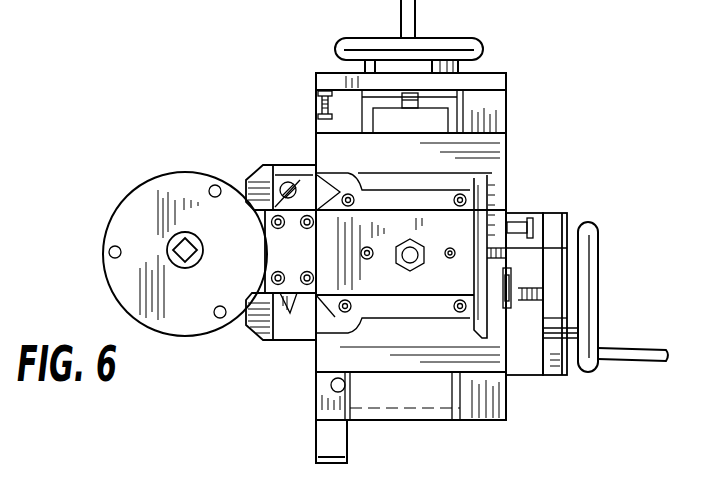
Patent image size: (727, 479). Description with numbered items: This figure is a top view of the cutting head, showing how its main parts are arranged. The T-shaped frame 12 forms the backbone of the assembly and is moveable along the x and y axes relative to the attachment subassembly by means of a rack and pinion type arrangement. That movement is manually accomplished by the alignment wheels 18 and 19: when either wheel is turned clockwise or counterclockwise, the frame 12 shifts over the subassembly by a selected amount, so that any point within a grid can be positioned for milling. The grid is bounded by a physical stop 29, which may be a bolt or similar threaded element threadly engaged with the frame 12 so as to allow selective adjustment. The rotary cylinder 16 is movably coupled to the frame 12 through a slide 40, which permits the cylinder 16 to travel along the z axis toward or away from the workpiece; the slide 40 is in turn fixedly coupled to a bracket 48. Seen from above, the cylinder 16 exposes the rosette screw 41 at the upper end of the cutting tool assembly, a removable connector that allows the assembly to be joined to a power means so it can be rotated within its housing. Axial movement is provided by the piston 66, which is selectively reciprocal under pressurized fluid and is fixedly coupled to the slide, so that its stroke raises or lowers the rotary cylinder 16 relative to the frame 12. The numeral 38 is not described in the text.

The T-shaped frame 12 is at (506, 147).
The rotary cylinder 16 is at (180, 183).
The alignment wheel 18 is at (460, 38).
The alignment wheel 19 is at (602, 303).
The physical stop 29 is at (528, 222).
The screw 38 is at (316, 107).
The slide 40 is at (258, 165).
The rosette screw 41 is at (173, 245).
The bracket 48 is at (397, 227).
The piston 66 is at (506, 98).